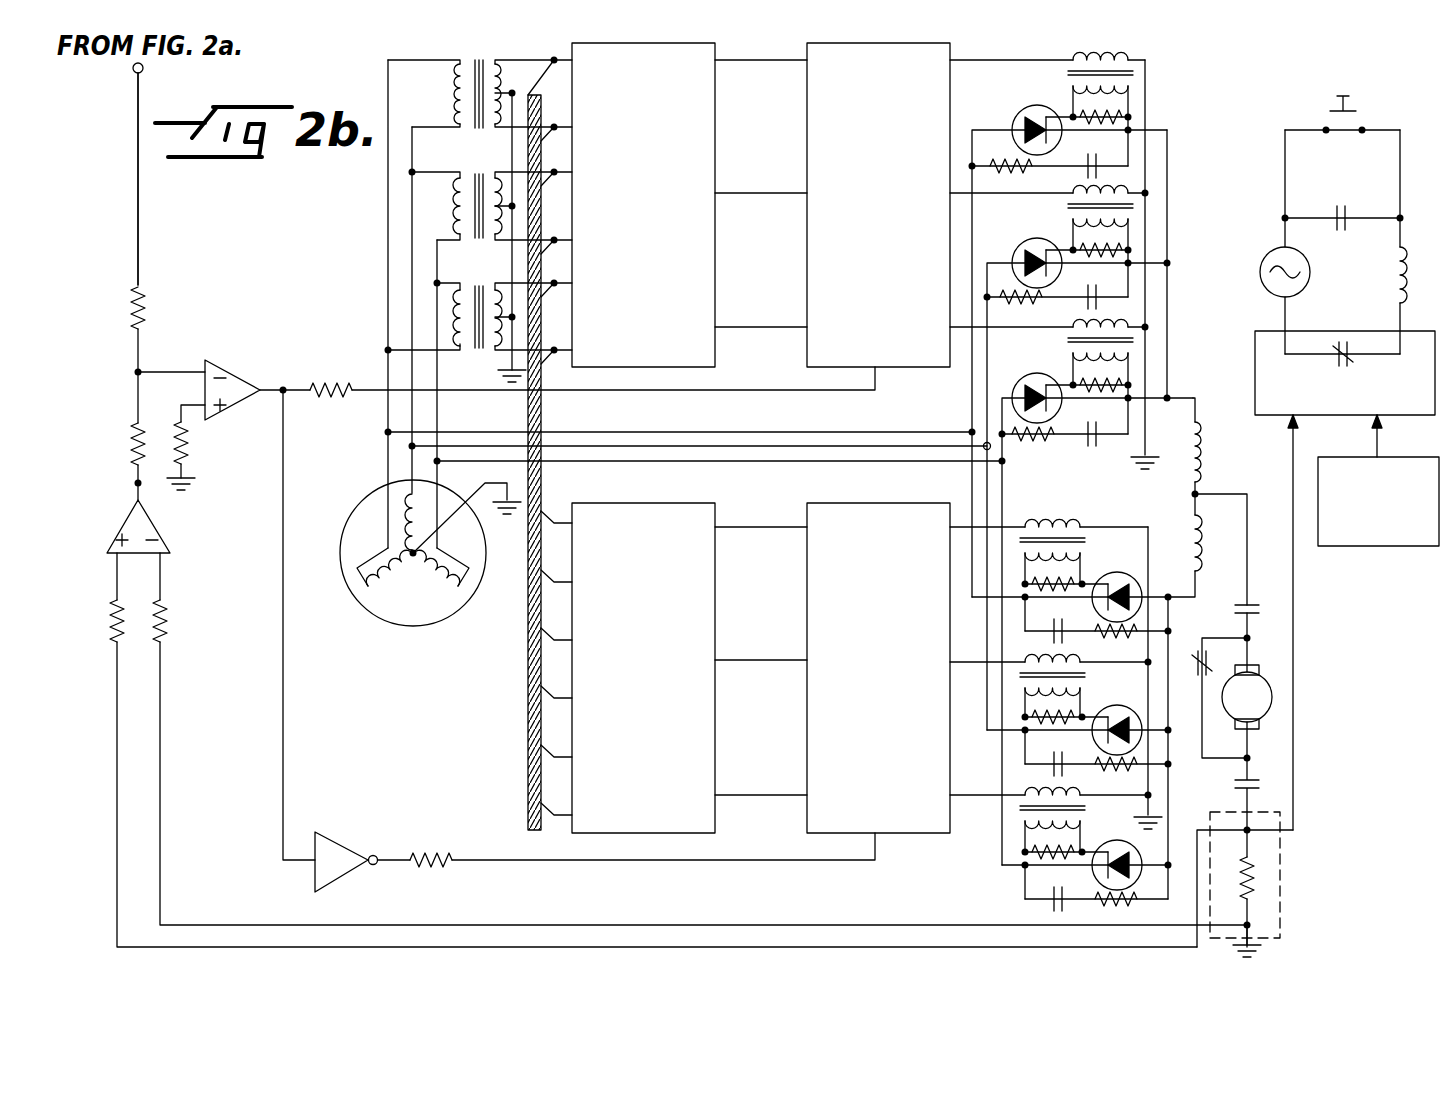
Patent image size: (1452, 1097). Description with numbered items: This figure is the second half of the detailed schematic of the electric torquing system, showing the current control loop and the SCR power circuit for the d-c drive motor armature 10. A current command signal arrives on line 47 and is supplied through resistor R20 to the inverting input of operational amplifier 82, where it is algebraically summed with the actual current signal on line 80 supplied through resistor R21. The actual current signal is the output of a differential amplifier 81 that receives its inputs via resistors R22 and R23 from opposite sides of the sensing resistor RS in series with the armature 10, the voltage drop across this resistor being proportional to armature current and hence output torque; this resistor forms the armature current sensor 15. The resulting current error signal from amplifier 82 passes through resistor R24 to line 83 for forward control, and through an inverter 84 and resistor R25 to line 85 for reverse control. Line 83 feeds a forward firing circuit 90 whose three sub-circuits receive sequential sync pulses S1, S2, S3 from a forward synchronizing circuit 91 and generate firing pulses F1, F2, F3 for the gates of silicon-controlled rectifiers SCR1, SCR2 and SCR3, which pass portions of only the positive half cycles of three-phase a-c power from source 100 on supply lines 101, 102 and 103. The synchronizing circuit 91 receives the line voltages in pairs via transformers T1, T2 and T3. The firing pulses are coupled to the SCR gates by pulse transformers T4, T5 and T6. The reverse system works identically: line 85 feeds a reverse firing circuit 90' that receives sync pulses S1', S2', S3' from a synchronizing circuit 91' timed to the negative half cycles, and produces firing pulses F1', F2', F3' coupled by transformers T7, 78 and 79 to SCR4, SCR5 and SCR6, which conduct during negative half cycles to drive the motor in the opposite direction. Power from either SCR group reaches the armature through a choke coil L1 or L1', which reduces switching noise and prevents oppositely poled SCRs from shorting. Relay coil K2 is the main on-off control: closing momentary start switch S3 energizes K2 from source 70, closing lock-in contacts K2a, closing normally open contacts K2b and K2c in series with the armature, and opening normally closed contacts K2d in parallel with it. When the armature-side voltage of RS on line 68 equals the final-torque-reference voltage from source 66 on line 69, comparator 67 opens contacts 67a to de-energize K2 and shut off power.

The line 47 is at (138, 115).
The resistor R20 is at (138, 314).
The resistor R21 is at (138, 445).
The line 80 is at (135, 484).
The differential amplifier 81 is at (118, 532).
The operational amplifier 82 is at (257, 372).
The resistor R24 is at (343, 388).
The line 83 is at (378, 398).
The resistor R22 is at (115, 636).
The resistor R23 is at (161, 630).
The inverter 84 is at (340, 880).
The resistor R25 is at (445, 863).
The line 85 is at (585, 863).
The transformer T1 is at (464, 59).
The transformer T2 is at (470, 172).
The transformer T3 is at (483, 286).
The forward firing circuit 90 is at (852, 205).
The forward synchronizing circuit 91 is at (680, 205).
The reverse firing circuit 90' is at (875, 645).
The reverse synchronizing circuit 91' is at (667, 645).
The sync pulse S1 is at (761, 77).
The sync pulse S2 is at (761, 211).
The start switch S3 is at (1066, 219).
The sync pulse S1' is at (761, 542).
The sync pulse S2' is at (761, 678).
The sync pulse S3' is at (761, 815).
The firing pulse F1 is at (1011, 46).
The firing pulse F2 is at (995, 206).
The firing pulse F3 is at (995, 343).
The firing pulse F1' is at (976, 498).
The firing pulse F2' is at (971, 675).
The firing pulse F3' is at (970, 812).
The source 100 is at (362, 503).
The supply line 101 is at (628, 432).
The supply line 102 is at (725, 446).
The supply line 103 is at (832, 461).
The pulse transformer T4 is at (1147, 80).
The pulse transformer T5 is at (1152, 214).
The pulse transformer T6 is at (1152, 348).
The pulse transformer T7 is at (1058, 522).
The pulse transformer 78 is at (1030, 654).
The pulse transformer 79 is at (1030, 788).
The silicon-controlled rectifier SCR1 is at (1056, 110).
The silicon-controlled rectifier SCR2 is at (1060, 240).
The silicon-controlled rectifier SCR3 is at (1070, 376).
The silicon-controlled rectifier SCR4 is at (1118, 572).
The silicon-controlled rectifier SCR5 is at (1118, 707).
The silicon-controlled rectifier SCR6 is at (1118, 842).
The choke coil L1 is at (1225, 446).
The choke coil L1' is at (1228, 545).
The contacts K2a is at (1363, 195).
The relay coil K2 is at (1394, 275).
The source 70 is at (1265, 264).
The comparator 67 is at (1255, 365).
The contacts 67a is at (1340, 342).
The source 66 is at (1378, 546).
The line 69 is at (1378, 422).
The line 68 is at (1293, 578).
The normally open contacts K2b is at (1260, 612).
The normally closed contacts K2d is at (1218, 662).
The armature 10 is at (1279, 698).
The normally open contacts K2c is at (1265, 782).
The armature current sensor 15 is at (1287, 857).
The sensing resistor RS is at (1258, 878).